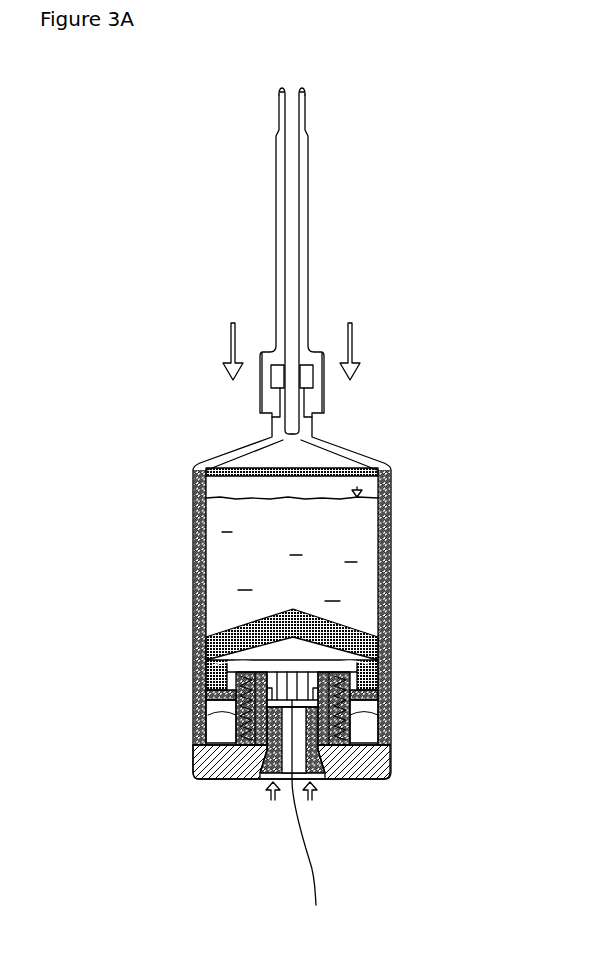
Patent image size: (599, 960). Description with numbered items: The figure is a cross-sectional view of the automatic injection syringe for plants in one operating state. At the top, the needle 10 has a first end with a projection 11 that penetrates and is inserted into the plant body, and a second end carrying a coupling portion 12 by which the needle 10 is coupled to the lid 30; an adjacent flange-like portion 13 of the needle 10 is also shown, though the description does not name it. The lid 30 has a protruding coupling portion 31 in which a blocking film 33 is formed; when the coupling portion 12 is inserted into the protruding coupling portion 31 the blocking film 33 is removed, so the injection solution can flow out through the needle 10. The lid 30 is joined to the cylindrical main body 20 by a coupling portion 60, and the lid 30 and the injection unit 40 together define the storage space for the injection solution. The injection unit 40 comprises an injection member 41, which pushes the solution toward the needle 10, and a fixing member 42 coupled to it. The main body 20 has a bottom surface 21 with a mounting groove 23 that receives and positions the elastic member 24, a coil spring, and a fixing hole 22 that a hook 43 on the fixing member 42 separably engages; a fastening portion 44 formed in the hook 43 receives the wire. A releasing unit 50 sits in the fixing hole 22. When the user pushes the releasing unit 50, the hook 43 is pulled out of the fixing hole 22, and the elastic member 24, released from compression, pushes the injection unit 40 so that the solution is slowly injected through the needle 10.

The needle 10 is at (307, 238).
The projection 11 is at (305, 94).
The coupling portion 12 is at (325, 396).
The tube flange 13 is at (290, 335).
The main body 20 is at (390, 578).
The bottom surface 21 is at (383, 782).
The fixing hole 22 is at (268, 700).
The mounting groove 23 is at (390, 750).
The elastic member 24 is at (193, 745).
The lid 30 is at (203, 463).
The protruding coupling portion 31 is at (277, 410).
The blocking film 33 is at (302, 426).
The injection unit 40 is at (200, 589).
The injection member 41 is at (379, 636).
The fixing member 42 is at (360, 664).
The hook 43 is at (200, 708).
The fastening portion 44 is at (205, 672).
The releasing unit 50 is at (280, 688).
The coupling portion 60 is at (383, 478).